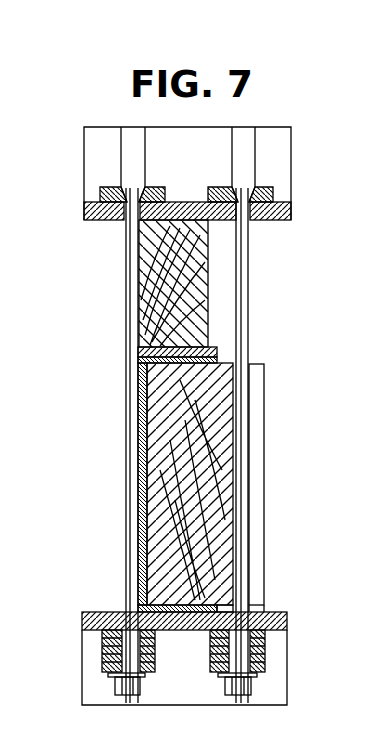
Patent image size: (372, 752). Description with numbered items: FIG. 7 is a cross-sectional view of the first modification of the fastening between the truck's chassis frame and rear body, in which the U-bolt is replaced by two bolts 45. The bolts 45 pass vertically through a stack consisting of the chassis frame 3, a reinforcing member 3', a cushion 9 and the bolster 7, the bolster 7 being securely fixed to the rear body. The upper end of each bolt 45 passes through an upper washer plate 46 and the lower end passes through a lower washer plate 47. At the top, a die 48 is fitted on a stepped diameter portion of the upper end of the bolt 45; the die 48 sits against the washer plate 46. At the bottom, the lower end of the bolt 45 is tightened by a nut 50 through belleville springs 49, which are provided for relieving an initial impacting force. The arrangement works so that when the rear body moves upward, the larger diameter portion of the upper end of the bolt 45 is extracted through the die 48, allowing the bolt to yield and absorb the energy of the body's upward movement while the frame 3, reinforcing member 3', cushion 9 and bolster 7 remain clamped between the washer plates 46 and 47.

The chassis frame 3 is at (163, 487).
The reinforcing member 3' is at (230, 488).
The bolster 7 is at (155, 272).
The cushion 9 is at (155, 330).
The bolt 45 is at (250, 304).
The washer plate 46 is at (291, 147).
The washer plate 47 is at (287, 652).
The die 48 is at (273, 194).
The belleville springs 49 is at (103, 652).
The nut 50 is at (150, 688).